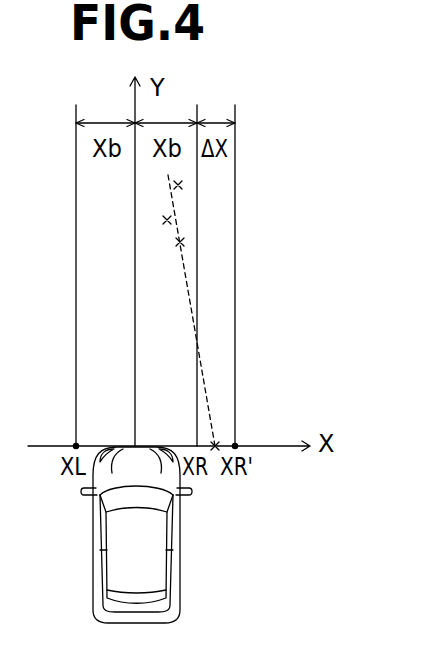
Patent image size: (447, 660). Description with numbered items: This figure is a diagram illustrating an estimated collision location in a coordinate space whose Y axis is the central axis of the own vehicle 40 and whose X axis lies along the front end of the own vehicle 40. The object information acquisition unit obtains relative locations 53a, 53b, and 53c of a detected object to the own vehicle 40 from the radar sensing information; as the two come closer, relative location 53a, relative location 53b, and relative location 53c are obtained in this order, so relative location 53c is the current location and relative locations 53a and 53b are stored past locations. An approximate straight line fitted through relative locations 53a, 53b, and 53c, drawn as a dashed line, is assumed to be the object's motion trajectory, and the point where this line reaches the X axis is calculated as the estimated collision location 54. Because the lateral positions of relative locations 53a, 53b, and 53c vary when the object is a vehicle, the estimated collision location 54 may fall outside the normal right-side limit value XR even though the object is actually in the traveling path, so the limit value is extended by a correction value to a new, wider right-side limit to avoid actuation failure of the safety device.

The relative location 53a is at (183, 185).
The relative location 53b is at (172, 220).
The relative location 53c is at (186, 240).
The estimated collision location 54 is at (215, 450).
The own vehicle 40 is at (180, 575).